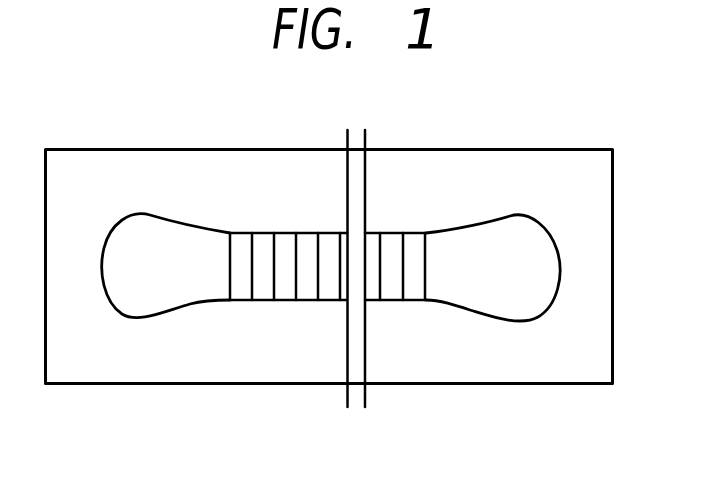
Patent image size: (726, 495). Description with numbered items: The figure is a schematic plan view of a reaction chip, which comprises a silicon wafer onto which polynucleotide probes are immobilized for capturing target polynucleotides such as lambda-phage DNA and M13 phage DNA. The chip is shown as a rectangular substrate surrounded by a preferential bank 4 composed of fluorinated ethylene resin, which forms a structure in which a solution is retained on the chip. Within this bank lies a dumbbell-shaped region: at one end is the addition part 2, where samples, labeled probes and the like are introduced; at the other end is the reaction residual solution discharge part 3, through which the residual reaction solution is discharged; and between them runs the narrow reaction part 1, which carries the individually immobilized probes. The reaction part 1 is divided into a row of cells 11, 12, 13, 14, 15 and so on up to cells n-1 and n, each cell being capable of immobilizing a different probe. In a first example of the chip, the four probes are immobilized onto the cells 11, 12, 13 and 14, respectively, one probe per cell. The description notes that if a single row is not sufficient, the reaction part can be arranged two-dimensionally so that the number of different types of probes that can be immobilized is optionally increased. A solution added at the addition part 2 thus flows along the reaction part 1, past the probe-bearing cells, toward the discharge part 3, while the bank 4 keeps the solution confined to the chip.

The reaction part 1 is at (435, 317).
The addition part 2 is at (128, 283).
The reaction residual solution discharge part 3 is at (497, 300).
The preferential bank 4 is at (187, 368).
The cell 11 is at (237, 242).
The cell 12 is at (263, 242).
The cell 13 is at (287, 242).
The cell 14 is at (308, 242).
The electrode 15 is at (328, 242).
The cell n-1 is at (392, 242).
The cell n is at (418, 242).